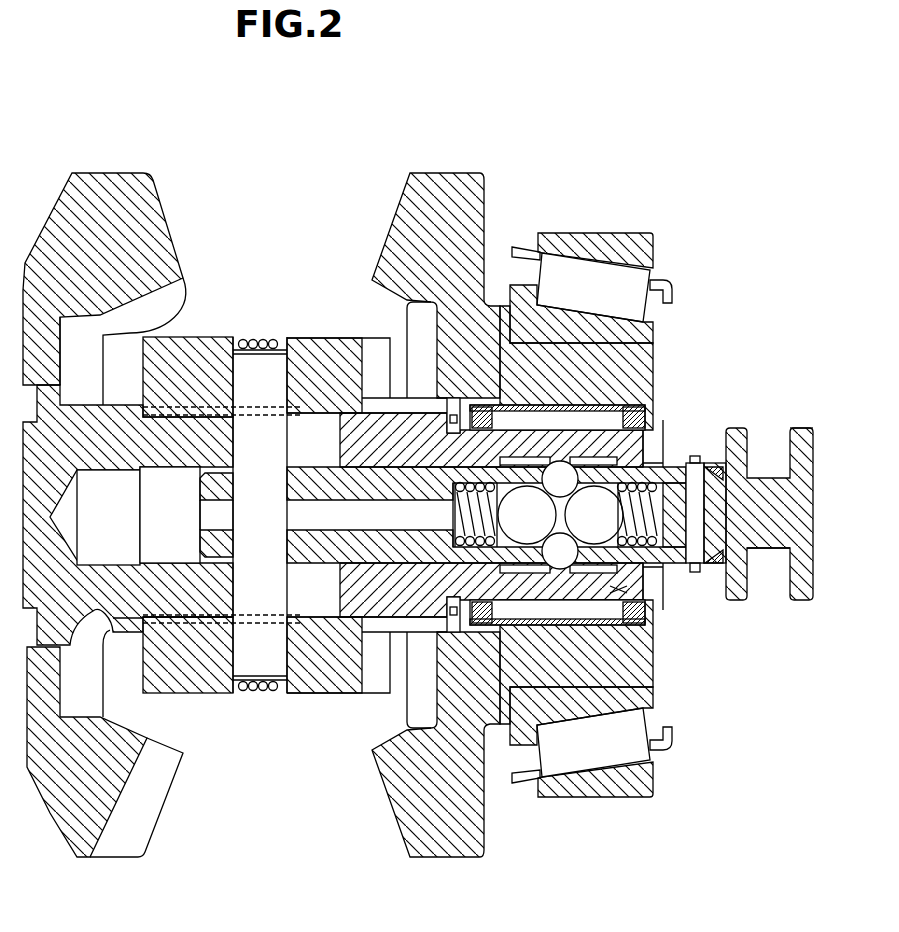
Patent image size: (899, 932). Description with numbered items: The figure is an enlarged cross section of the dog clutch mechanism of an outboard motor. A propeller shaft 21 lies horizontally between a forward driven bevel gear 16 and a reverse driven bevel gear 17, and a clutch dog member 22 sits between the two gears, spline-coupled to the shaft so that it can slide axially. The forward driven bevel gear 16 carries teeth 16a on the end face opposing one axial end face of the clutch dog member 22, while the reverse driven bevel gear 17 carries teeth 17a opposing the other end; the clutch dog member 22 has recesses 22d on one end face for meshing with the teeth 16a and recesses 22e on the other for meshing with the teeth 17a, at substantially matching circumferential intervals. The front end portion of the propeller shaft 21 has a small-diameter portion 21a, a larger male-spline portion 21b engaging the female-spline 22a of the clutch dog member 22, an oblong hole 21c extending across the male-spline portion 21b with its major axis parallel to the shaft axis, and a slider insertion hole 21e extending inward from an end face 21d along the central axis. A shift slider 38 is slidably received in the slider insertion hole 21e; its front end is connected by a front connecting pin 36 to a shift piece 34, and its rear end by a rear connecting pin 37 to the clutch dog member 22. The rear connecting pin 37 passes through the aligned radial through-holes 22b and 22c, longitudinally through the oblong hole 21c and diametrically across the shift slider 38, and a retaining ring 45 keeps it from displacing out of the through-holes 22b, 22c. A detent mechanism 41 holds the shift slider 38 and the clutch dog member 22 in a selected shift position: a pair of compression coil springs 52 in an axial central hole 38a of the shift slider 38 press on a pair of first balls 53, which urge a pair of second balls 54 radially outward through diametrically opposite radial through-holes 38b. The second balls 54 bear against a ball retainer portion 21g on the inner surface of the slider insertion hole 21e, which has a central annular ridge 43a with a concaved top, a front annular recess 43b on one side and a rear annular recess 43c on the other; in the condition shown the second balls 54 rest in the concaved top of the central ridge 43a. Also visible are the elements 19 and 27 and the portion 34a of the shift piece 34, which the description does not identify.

The forward driven bevel gear 16 is at (448, 158).
The teeth 16a is at (420, 320).
The reverse driven bevel gear 17 is at (108, 157).
The teeth 17a is at (82, 335).
The tapered roller 19 is at (545, 722).
The propeller shaft 21 is at (98, 631).
The small-diameter portion 21a is at (652, 352).
The male-spline portion 21b is at (310, 400).
The oblong hole 21c is at (205, 640).
The end face 21d is at (645, 437).
The slider insertion hole 21e is at (330, 640).
The ball retainer portion 21g is at (640, 585).
The clutch dog member 22 is at (211, 321).
The rotor hub portion 22a is at (317, 403).
The radial through-hole 22b is at (240, 377).
The radial through-hole 22c is at (243, 675).
The recesses 22d is at (400, 770).
The recesses 22e is at (140, 695).
The bearing cage 27 is at (660, 280).
The shift piece 34 is at (806, 428).
The coupling groove 34a is at (788, 585).
The front connecting pin 36 is at (696, 574).
The rear connecting pin 37 is at (255, 390).
The shift slider 38 is at (285, 692).
The axial central hole 38a is at (290, 675).
The radial through-holes 38b is at (640, 236).
The detent mechanism 41 is at (805, 420).
The central annular ridge 43a is at (600, 792).
The front annular recess 43b is at (618, 590).
The inner ring 43c is at (505, 700).
The retaining ring 45 is at (262, 692).
The compression coil springs 52 is at (452, 408).
The first balls 53 is at (525, 500).
The second balls 54 is at (596, 500).